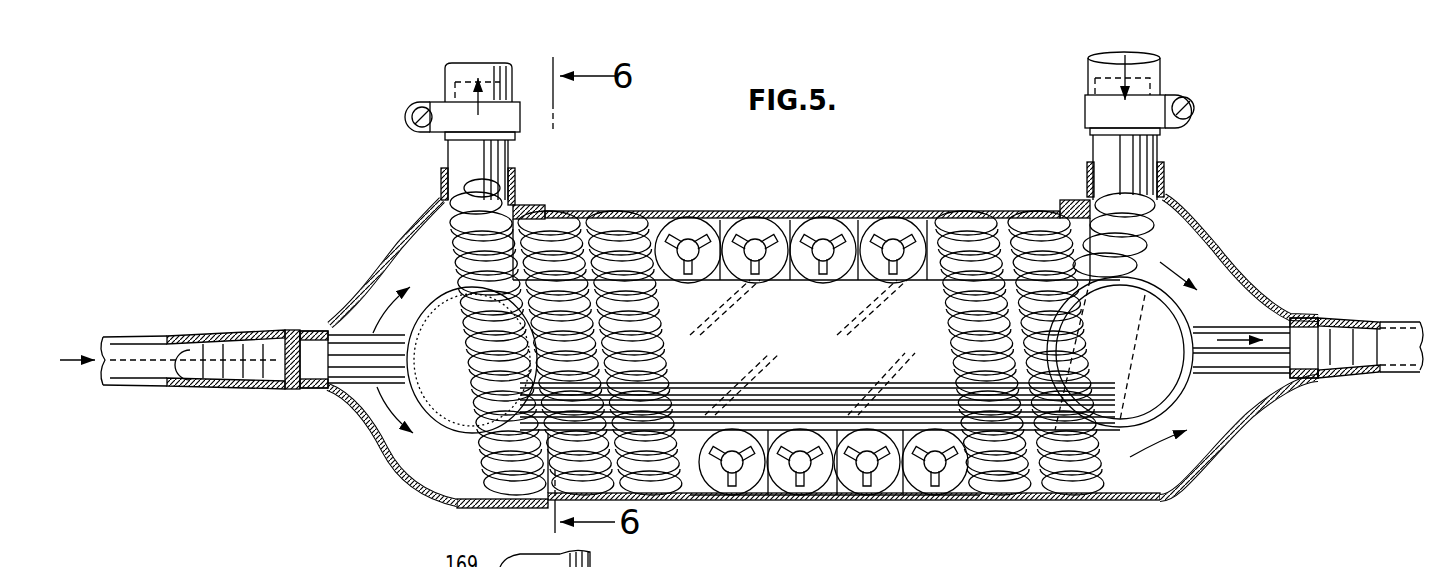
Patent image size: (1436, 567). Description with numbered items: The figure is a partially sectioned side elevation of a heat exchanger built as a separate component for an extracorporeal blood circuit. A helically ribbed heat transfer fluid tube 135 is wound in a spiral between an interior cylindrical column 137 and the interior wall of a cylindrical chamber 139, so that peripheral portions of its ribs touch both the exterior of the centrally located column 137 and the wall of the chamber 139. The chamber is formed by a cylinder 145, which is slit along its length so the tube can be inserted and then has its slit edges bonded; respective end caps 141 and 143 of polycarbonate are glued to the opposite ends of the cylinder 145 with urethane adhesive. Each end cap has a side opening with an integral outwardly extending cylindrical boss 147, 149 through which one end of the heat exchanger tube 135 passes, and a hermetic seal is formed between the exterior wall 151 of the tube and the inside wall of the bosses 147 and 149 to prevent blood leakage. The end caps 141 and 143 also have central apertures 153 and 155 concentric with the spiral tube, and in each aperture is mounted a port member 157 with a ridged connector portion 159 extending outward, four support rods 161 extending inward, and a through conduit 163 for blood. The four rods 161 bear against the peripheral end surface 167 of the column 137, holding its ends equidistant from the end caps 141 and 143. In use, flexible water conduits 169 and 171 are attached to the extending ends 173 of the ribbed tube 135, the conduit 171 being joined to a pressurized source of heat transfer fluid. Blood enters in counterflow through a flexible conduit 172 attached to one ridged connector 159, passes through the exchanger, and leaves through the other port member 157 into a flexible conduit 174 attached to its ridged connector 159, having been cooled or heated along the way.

The helically ribbed heat transfer fluid tube 135 is at (695, 486).
The interior cylindrical column 137 is at (832, 362).
The cylindrical chamber 139 is at (833, 482).
The end cap 141 is at (398, 483).
The end cap 143 is at (1212, 472).
The cylinder 145 is at (745, 500).
The cylindrical boss 147 is at (442, 186).
The cylindrical boss 149 is at (1165, 180).
The exterior wall 151 is at (512, 161).
The central aperture 153 is at (318, 378).
The central aperture 155 is at (1303, 368).
The port member 157 is at (290, 328).
The ridged connector portion 159 is at (236, 366).
The support rods 161 is at (358, 335).
The through conduit 163 is at (195, 368).
The peripheral end surface 167 is at (440, 288).
The flexible water conduit 169 is at (445, 70).
The flexible water conduit 171 is at (1088, 62).
The flexible conduit 172 is at (145, 333).
The extending ends 173 is at (448, 146).
The flexible conduit 174 is at (1392, 375).